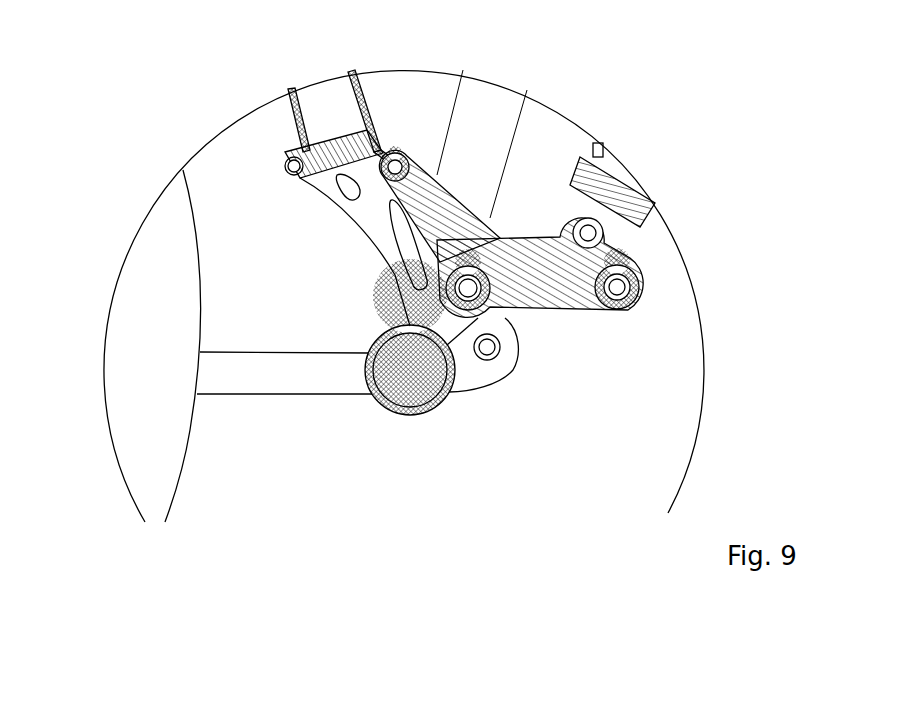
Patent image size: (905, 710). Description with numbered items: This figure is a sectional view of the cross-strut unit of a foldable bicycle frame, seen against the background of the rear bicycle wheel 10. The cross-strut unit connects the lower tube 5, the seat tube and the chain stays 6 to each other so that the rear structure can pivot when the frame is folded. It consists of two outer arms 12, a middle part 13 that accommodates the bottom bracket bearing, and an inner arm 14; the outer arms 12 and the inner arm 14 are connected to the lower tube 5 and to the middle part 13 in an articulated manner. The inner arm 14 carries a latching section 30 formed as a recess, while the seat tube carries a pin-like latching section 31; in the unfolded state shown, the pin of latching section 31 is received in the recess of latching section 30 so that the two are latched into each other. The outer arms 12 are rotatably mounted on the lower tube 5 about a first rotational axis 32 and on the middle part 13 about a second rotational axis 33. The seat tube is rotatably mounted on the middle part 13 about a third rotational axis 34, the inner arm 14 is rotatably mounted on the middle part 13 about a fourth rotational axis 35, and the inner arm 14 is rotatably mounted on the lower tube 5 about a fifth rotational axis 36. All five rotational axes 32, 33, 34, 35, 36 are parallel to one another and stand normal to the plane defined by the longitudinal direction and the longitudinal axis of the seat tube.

The lower tube 5 is at (642, 208).
The chain stays 6 is at (287, 373).
The rear bicycle wheel 10 is at (148, 288).
The outer arms 12 is at (513, 313).
The middle part 13 is at (343, 207).
The inner arm 14 is at (437, 203).
The latching section 30 is at (405, 160).
The latching section 31 is at (392, 165).
The first rotational axis 32 is at (588, 236).
The second rotational axis 33 is at (487, 348).
The third rotational axis 34 is at (294, 166).
The fourth rotational axis 35 is at (467, 290).
The fifth rotational axis 36 is at (617, 288).